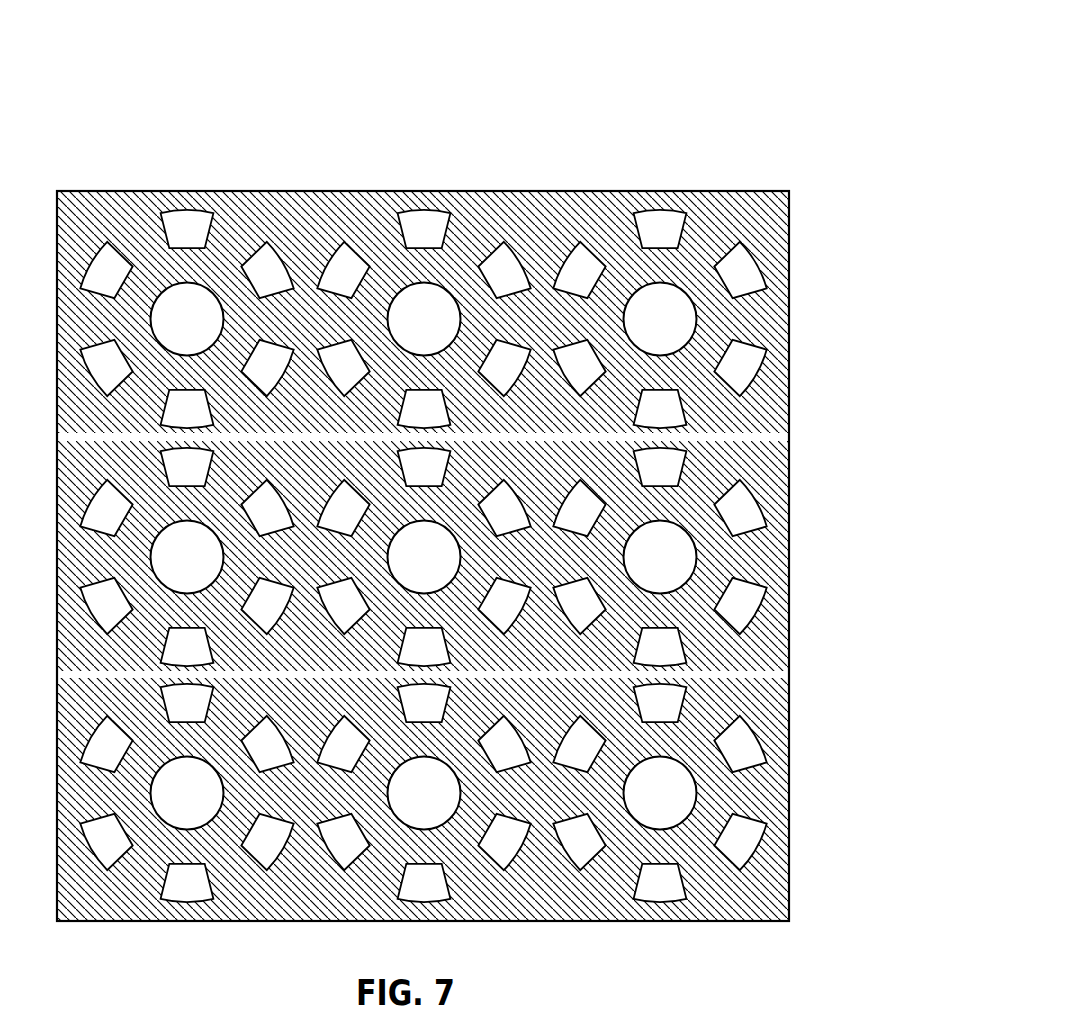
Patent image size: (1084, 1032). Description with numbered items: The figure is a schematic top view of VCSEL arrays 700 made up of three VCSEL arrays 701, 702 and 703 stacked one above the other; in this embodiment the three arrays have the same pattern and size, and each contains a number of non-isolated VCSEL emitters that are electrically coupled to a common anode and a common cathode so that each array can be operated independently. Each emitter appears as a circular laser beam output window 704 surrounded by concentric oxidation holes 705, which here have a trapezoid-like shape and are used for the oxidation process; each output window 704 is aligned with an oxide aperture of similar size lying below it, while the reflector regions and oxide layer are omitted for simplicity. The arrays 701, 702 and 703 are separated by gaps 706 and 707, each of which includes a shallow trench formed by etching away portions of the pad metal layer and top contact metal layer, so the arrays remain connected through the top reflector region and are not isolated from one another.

The VCSEL arrays 700 is at (499, 468).
The VCSEL array 701 is at (456, 281).
The VCSEL array 702 is at (788, 566).
The VCSEL array 703 is at (788, 793).
The laser beam output window 704 is at (443, 243).
The concentric oxidation holes 705 is at (633, 189).
The gap 706 is at (770, 436).
The gap 707 is at (770, 674).